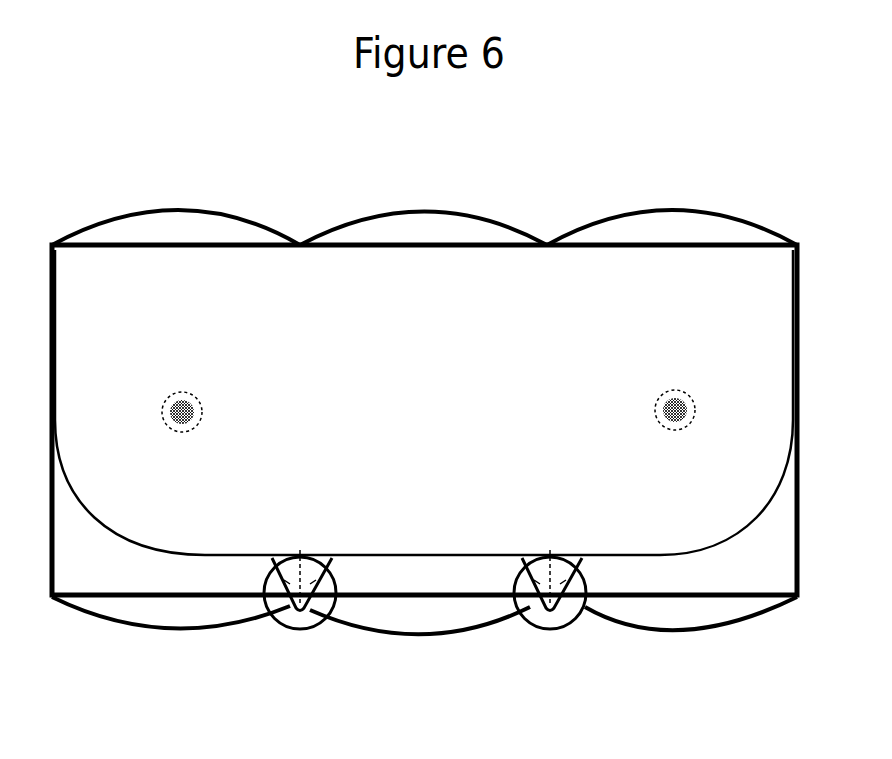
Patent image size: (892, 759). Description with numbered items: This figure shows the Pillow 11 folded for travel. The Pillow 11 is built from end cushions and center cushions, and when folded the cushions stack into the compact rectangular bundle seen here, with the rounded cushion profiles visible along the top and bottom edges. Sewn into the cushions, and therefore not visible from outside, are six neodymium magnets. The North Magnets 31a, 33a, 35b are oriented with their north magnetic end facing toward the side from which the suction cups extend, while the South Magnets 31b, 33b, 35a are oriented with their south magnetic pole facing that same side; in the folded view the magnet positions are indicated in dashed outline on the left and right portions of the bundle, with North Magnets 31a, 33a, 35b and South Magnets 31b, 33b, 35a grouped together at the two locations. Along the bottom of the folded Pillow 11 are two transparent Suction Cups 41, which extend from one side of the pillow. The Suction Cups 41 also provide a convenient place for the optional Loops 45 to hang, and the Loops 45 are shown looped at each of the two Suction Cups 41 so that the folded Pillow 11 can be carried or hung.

The Pillow 11 is at (424, 366).
The South Magnet 31b is at (326, 383).
The South Magnet 33b is at (326, 383).
The North Magnet 35b is at (190, 410).
The North Magnet 31a is at (522, 431).
The North Magnet 33a is at (522, 431).
The South Magnet 35a is at (670, 412).
The Loops 45 is at (510, 570).
The Suction Cups 41 is at (310, 637).